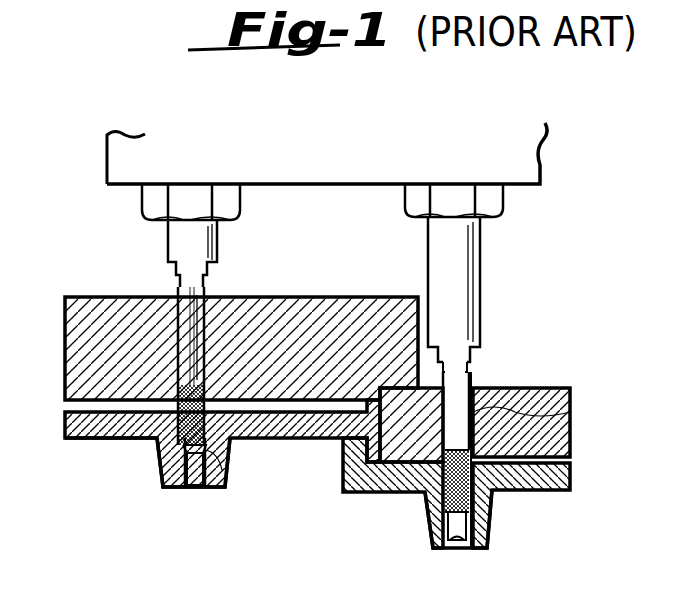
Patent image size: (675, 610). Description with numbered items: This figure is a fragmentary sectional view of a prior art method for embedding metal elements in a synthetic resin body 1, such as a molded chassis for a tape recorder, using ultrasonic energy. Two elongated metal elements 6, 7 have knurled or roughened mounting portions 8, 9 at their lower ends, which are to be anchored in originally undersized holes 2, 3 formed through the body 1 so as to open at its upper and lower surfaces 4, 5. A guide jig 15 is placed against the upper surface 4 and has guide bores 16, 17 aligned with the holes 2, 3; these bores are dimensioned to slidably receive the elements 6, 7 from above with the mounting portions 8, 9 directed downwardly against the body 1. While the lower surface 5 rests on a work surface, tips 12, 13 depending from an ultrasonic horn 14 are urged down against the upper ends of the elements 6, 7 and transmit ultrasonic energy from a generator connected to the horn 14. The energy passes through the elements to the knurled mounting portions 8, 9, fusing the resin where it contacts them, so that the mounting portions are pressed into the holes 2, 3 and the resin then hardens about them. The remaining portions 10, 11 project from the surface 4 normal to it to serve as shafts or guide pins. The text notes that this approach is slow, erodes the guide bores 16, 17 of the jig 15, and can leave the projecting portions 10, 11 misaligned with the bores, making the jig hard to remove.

The synthetic resin body 1 is at (570, 480).
The hole 2 is at (188, 490).
The hole 3 is at (463, 548).
The upper surface 4 is at (65, 414).
The lower surface 5 is at (100, 444).
The metal element 6 is at (208, 294).
The metal element 7 is at (471, 368).
The mounting portion 8 is at (228, 478).
The mounting portion 9 is at (444, 502).
The projecting portion 10 is at (178, 292).
The projecting portion 11 is at (472, 377).
The tip 12 is at (168, 240).
The tip 13 is at (479, 246).
The ultrasonic horn 14 is at (107, 172).
The guide jig 15 is at (569, 448).
The guide bore 16 is at (207, 332).
The guide bore 17 is at (570, 404).